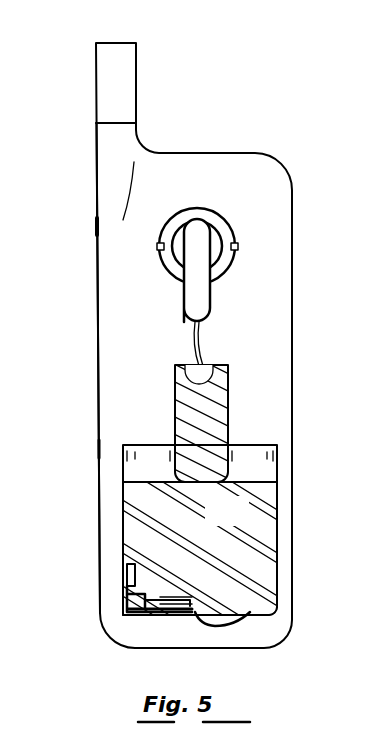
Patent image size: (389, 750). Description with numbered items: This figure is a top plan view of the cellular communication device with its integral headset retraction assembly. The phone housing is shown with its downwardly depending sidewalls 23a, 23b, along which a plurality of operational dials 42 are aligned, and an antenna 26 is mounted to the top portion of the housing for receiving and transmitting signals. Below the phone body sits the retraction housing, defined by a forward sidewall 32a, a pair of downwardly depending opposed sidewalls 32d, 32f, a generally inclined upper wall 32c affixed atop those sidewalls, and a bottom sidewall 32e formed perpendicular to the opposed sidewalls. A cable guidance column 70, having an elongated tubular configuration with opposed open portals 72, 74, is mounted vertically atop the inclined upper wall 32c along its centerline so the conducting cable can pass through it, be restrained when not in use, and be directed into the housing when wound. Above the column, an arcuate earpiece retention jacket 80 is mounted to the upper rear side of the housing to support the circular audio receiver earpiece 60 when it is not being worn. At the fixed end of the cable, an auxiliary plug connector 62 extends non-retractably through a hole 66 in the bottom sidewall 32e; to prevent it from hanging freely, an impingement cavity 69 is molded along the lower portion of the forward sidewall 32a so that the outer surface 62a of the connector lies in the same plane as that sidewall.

The downwardly depending sidewall 23a is at (293, 293).
The downwardly depending sidewall 23b is at (98, 318).
The antenna 26 is at (97, 80).
The operational dials 42 is at (95, 223).
The audio receiver earpiece 60 is at (199, 207).
The earpiece retention jacket 80 is at (238, 246).
The open portal 72 is at (232, 353).
The cable guidance column 70 is at (240, 392).
The open portal 74 is at (195, 475).
The forward sidewall 32a is at (246, 522).
The inclined upper wall 32c is at (272, 445).
The downwardly depending opposed sidewall 32d is at (125, 560).
The bottom sidewall 32e is at (276, 618).
The downwardly depending opposed sidewall 32f is at (280, 547).
The auxiliary plug connector 62 is at (127, 594).
The outer surface 62a is at (170, 616).
The hole 66 is at (245, 620).
The impingement cavity 69 is at (124, 612).